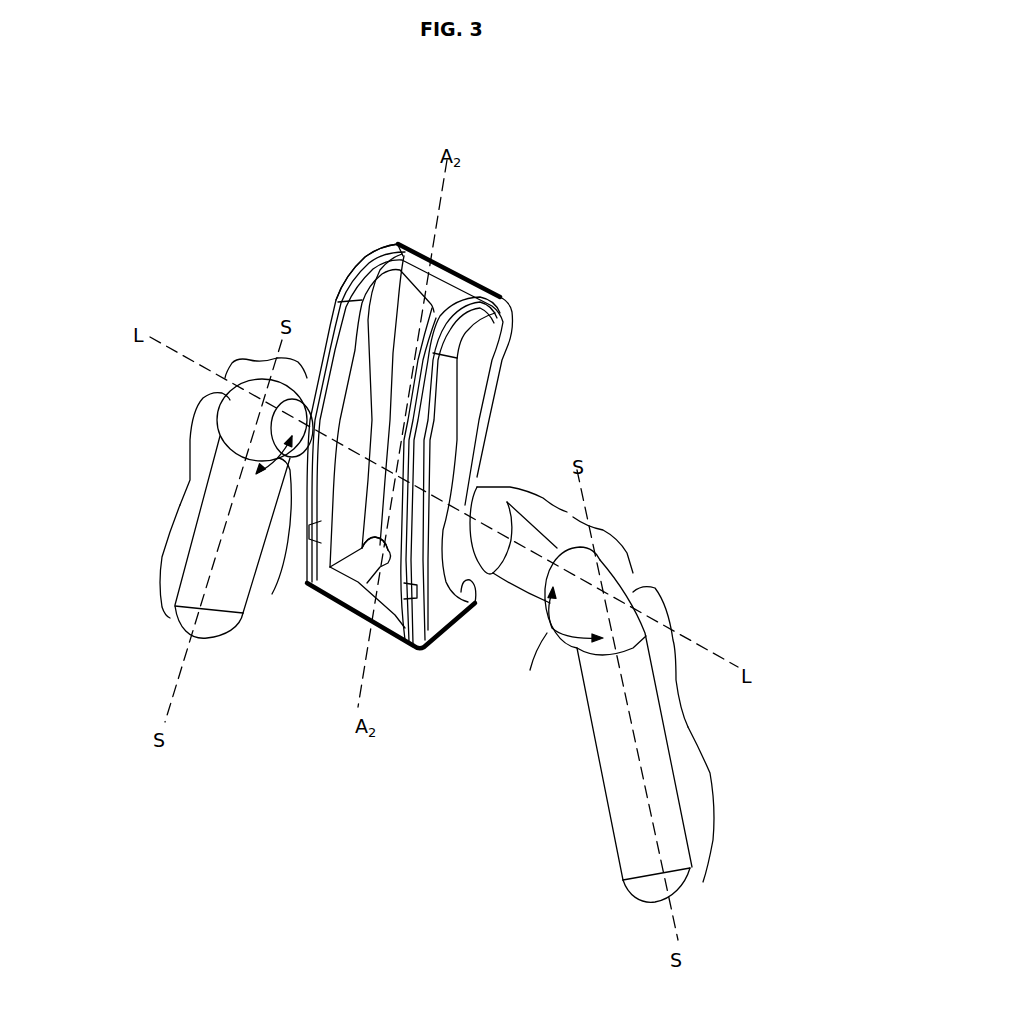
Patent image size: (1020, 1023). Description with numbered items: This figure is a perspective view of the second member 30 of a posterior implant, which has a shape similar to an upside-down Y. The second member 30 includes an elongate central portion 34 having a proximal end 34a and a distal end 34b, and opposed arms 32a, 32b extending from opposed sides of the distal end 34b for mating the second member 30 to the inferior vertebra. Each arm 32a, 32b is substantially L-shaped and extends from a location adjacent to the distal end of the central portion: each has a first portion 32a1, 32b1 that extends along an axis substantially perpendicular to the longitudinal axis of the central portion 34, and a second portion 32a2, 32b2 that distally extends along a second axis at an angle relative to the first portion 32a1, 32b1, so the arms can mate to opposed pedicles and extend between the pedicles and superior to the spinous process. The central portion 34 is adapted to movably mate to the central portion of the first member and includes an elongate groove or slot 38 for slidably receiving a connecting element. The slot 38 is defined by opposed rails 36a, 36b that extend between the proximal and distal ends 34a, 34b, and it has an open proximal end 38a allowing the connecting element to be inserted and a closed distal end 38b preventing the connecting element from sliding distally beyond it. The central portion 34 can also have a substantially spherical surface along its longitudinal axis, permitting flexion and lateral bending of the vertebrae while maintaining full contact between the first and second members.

The second member 30 is at (660, 135).
The elongate central portion 34 is at (490, 378).
The proximal end 34a is at (378, 218).
The distal end 34b is at (430, 665).
The rail 36a is at (336, 312).
The rail 36b is at (458, 332).
The slot 38 is at (415, 352).
The open proximal end 38a is at (465, 250).
The closed distal end 38b is at (335, 598).
The arm 32a is at (590, 725).
The first portion 32a1 is at (567, 512).
The second portion 32a2 is at (690, 730).
The arm 32b is at (243, 615).
The first portion 32b1 is at (277, 358).
The second portion 32b2 is at (176, 506).